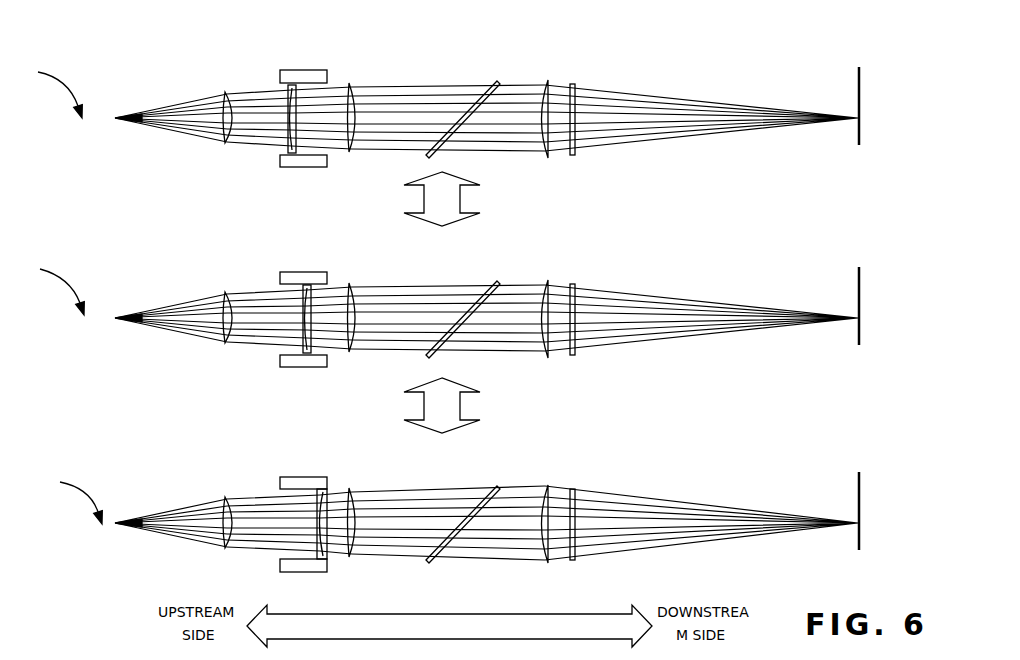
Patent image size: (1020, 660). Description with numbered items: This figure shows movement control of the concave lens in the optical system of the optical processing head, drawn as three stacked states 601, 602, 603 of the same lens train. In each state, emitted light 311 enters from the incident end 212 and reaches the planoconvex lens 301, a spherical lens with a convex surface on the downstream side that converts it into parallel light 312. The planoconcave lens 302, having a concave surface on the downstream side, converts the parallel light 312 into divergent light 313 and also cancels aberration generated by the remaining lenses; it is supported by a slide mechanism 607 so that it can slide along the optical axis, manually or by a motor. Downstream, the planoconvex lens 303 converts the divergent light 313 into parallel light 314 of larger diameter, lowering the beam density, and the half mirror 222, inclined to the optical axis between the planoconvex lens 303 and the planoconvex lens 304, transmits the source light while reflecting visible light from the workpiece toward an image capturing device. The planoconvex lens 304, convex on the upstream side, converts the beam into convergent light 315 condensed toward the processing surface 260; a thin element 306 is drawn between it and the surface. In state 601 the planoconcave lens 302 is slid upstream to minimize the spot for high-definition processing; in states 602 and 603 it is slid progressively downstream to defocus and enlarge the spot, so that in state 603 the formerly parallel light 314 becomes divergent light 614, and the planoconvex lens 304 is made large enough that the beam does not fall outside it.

The focused state 601 is at (45, 87).
The first defocused state 602 is at (48, 284).
The second defocused state 603 is at (63, 493).
The incident end 212 is at (113, 115).
The emitted light 311 is at (172, 106).
The planoconvex lens 301 is at (225, 91).
The parallel light 312 is at (251, 143).
The planoconcave lens 302 is at (289, 88).
The slide mechanism 607 is at (303, 76).
The divergent light 313 is at (336, 150).
The planoconvex lens 303 is at (349, 83).
The parallel light 314 is at (418, 95).
The divergent light 614 is at (409, 500).
The half mirror 222 is at (497, 81).
The planoconvex lens 304 is at (545, 81).
The aperture plate 306 is at (574, 85).
The convergent light 315 is at (661, 100).
The processing surface 260 is at (859, 82).